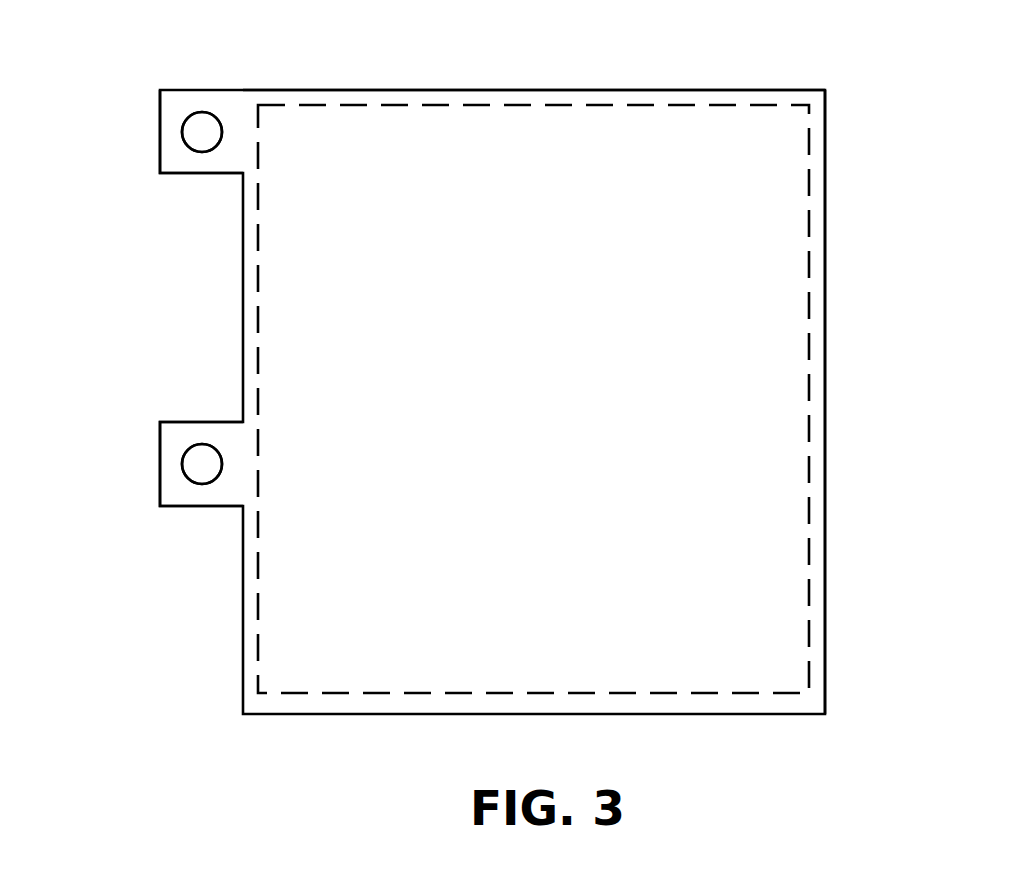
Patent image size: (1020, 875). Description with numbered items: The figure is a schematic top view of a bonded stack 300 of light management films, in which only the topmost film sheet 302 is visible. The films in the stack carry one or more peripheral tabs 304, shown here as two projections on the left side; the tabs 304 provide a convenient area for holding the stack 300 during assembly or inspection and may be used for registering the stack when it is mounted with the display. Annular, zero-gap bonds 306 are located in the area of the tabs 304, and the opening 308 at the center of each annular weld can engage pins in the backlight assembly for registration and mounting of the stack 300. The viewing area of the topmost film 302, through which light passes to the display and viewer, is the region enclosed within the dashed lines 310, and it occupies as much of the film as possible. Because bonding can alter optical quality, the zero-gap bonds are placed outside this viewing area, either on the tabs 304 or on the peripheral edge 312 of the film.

The bonded stack 300 is at (360, 716).
The topmost film sheet 302 is at (827, 378).
The peripheral tabs 304 is at (200, 174).
The annular zero-gap bonds 306 is at (202, 111).
The opening 308 is at (195, 133).
The dashed lines 310 is at (352, 103).
The peripheral edge 312 is at (593, 88).